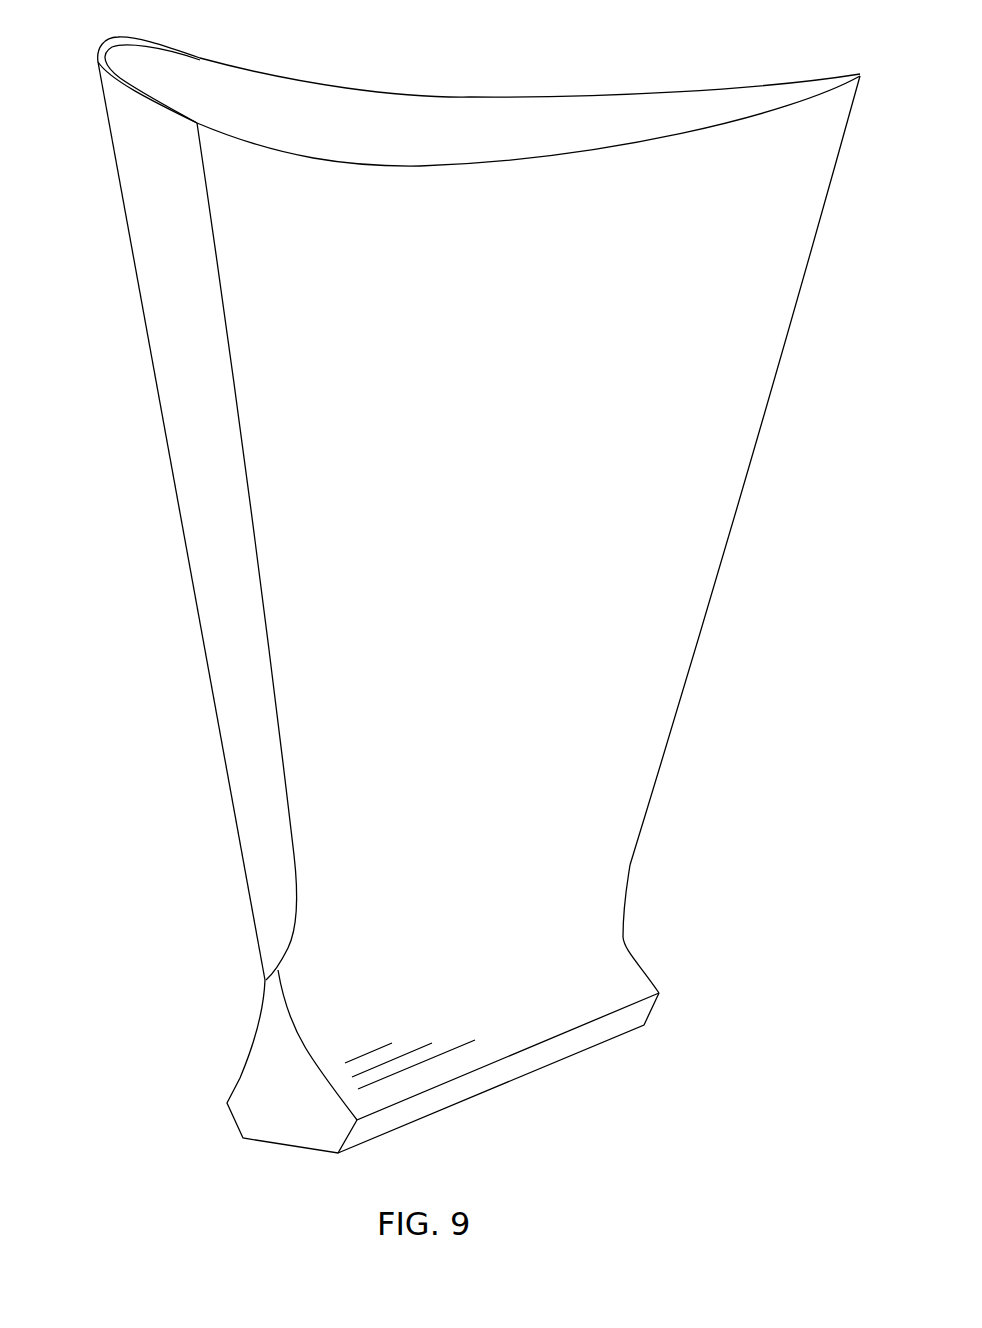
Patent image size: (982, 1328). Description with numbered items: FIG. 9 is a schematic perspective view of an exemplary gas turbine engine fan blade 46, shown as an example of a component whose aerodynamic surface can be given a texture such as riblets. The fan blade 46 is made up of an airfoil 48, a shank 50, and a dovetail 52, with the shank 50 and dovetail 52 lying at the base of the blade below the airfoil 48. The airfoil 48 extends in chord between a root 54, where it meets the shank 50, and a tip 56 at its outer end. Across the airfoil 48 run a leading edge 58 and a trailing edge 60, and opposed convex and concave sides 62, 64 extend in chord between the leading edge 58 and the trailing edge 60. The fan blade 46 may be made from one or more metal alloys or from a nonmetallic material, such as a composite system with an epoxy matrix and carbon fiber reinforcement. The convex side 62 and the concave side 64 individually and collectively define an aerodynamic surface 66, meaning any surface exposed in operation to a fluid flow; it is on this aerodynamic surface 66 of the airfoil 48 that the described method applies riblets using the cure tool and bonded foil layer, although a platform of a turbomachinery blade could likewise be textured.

The gas turbine engine fan blade 46 is at (463, 583).
The airfoil 48 is at (239, 676).
The shank 50 is at (520, 957).
The dovetail 52 is at (537, 1070).
The root 54 is at (312, 1026).
The tip 56 is at (610, 127).
The leading edge 58 is at (148, 343).
The trailing edge 60 is at (780, 365).
The convex side 62 is at (512, 509).
The concave side 64 is at (765, 262).
The aerodynamic surface 66 is at (736, 435).